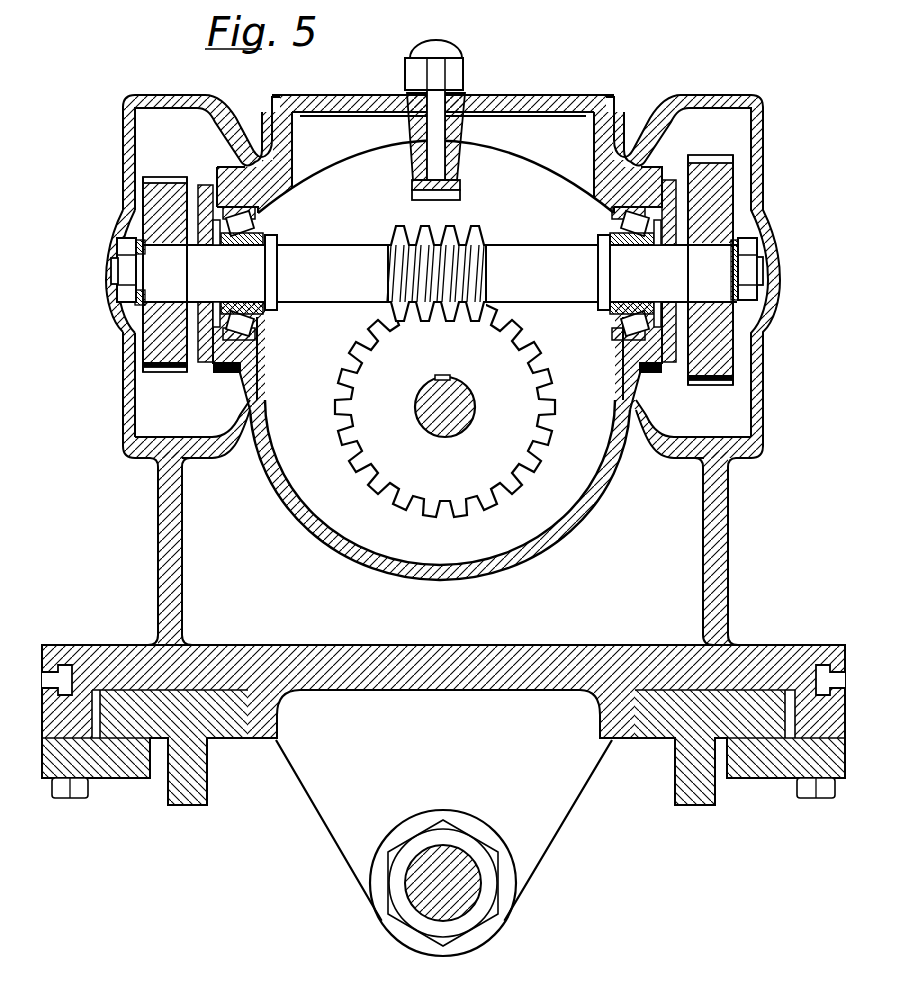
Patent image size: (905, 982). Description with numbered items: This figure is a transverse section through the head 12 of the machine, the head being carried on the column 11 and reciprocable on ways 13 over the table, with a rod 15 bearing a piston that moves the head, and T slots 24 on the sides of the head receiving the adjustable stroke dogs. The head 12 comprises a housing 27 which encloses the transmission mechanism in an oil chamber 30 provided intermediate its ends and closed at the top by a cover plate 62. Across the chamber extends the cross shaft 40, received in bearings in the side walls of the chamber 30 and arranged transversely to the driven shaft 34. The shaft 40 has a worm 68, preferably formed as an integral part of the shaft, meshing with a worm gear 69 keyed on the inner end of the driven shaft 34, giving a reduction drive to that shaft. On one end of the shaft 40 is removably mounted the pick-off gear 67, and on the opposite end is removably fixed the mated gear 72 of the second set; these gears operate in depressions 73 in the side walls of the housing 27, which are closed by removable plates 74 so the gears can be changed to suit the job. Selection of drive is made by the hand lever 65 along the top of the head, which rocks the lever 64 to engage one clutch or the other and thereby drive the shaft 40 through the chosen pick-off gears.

The column 11 is at (178, 800).
The head 12 is at (158, 502).
The ways 13 is at (222, 690).
The rod 15 is at (478, 896).
The T slots 24 is at (42, 660).
The housing 27 is at (722, 519).
The oil chamber 30 is at (548, 504).
The driven shaft 34 is at (438, 433).
The cross shaft 40 is at (437, 273).
The cover plate 62 is at (583, 106).
The lever 64 is at (458, 190).
The hand lever 65 is at (463, 72).
The pick-off gear 67 is at (166, 181).
The worm 68 is at (486, 238).
The worm gear 69 is at (522, 346).
The mated gear 72 is at (715, 158).
The depressions 73 is at (192, 125).
The removable plates 74 is at (125, 186).